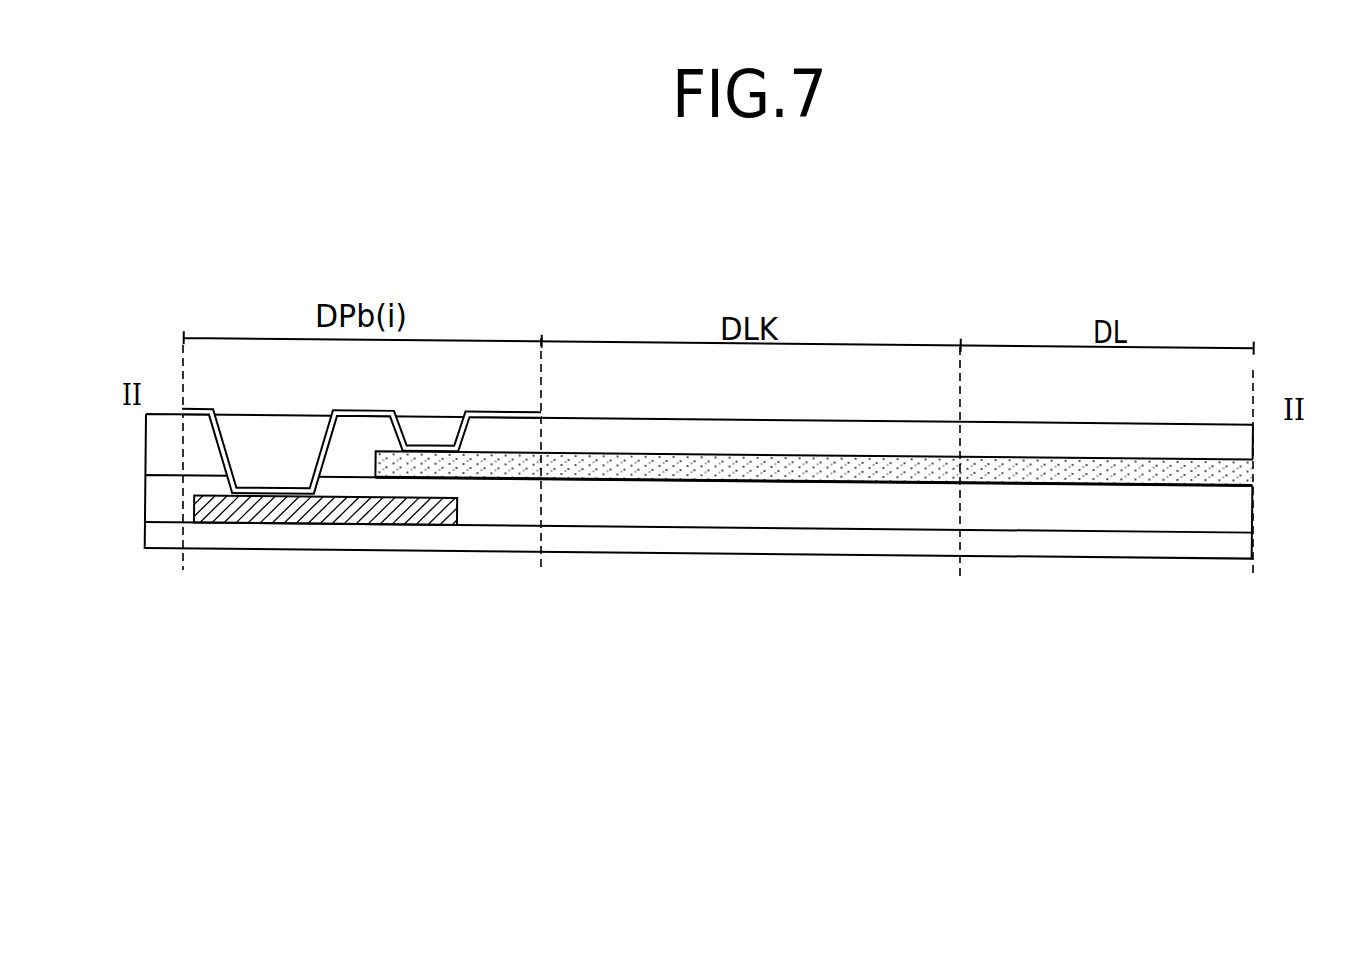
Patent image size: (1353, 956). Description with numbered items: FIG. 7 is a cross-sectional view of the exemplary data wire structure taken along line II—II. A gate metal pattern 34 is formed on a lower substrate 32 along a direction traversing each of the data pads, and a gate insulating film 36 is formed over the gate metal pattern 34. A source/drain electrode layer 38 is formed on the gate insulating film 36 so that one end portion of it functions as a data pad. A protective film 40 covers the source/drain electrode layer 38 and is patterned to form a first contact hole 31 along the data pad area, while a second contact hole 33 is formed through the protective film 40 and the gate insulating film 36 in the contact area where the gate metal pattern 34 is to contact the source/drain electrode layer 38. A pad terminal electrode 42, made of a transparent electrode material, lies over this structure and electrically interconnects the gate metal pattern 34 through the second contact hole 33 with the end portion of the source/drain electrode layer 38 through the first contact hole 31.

The first contact hole 31 is at (425, 427).
The lower substrate 32 is at (1253, 548).
The second contact hole 33 is at (265, 447).
The gate metal pattern 34 is at (321, 512).
The gate insulating film 36 is at (1253, 502).
The source/drain electrode layer 38 is at (1253, 472).
The protective film 40 is at (1253, 442).
The pad terminal electrode 42 is at (213, 408).